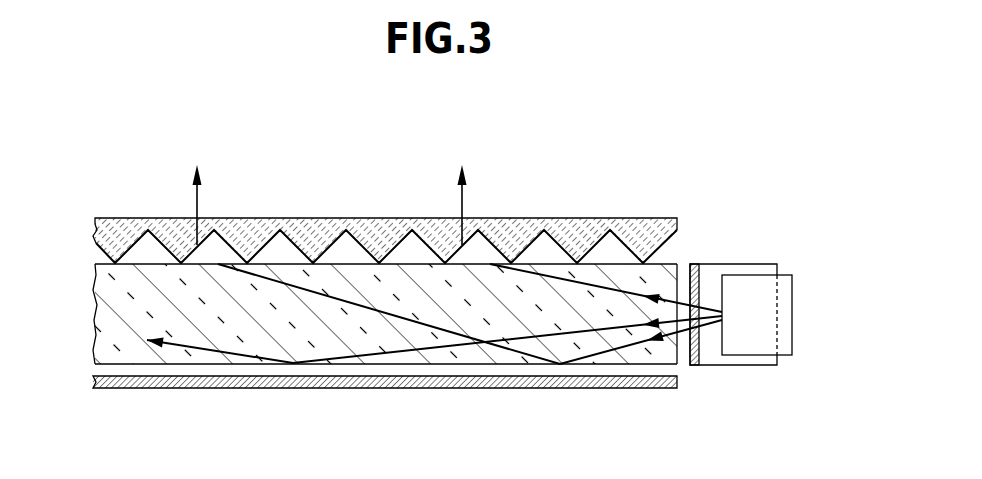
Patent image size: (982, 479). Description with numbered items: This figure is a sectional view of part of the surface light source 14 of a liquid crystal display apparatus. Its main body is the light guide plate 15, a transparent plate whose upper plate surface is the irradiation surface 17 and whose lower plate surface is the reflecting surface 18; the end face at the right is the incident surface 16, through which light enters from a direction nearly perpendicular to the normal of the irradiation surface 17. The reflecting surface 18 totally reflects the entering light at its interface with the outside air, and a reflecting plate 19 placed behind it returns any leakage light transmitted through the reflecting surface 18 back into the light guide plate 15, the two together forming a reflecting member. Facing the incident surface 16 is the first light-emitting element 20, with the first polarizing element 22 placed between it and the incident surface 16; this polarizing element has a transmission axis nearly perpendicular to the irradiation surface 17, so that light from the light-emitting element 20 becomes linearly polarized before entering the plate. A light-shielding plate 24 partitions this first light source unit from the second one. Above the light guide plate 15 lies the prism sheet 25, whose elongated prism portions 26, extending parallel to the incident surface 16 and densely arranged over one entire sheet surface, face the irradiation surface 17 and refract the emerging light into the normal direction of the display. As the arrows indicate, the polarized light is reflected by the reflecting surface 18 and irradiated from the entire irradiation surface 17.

The surface light source 14 is at (676, 195).
The light guide plate 15 is at (170, 308).
The incident surface 16 is at (678, 348).
The irradiation surface 17 is at (202, 265).
The reflecting surface 18 is at (195, 364).
The reflecting plate 19 is at (435, 389).
The first light-emitting element 20 is at (758, 315).
The first polarizing element 22 is at (698, 284).
The light-shielding plate 24 is at (738, 264).
The prism sheet 25 is at (120, 217).
The prism portions 26 is at (245, 250).